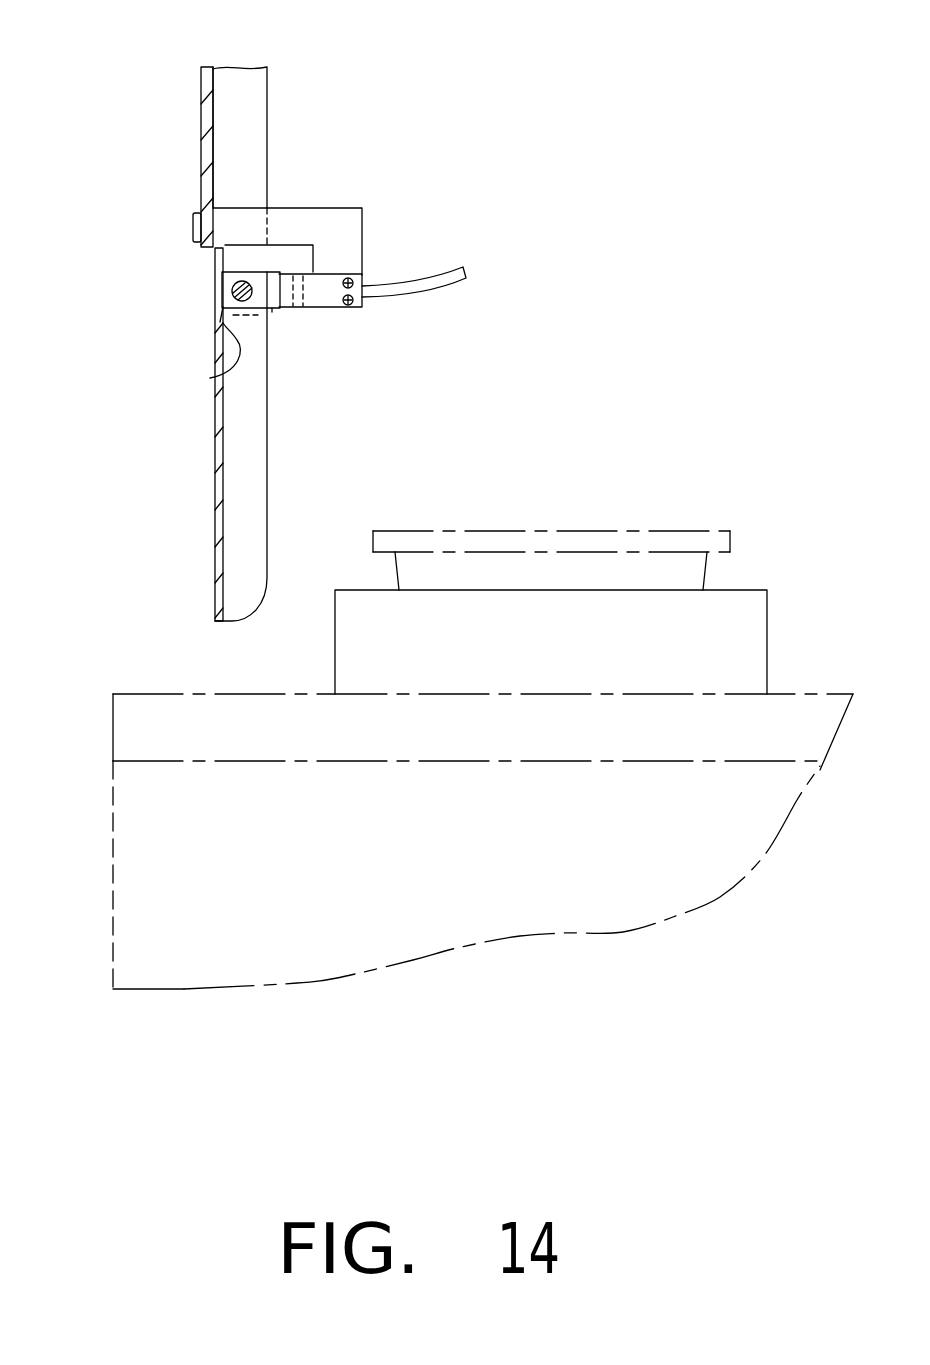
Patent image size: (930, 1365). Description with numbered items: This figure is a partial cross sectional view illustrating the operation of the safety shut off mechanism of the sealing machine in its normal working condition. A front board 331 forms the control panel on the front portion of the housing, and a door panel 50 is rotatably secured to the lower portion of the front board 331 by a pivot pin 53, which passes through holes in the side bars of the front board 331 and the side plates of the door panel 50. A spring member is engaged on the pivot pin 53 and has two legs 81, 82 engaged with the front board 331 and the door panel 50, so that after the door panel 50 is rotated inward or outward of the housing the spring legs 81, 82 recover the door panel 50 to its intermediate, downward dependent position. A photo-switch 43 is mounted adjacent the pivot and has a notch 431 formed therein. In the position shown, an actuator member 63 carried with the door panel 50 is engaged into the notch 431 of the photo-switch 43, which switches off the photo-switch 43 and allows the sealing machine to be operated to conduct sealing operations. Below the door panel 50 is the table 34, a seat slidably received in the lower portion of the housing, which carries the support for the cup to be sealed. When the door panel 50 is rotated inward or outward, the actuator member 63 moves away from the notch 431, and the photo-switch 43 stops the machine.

The front board 331 is at (201, 125).
The leg 81 is at (218, 272).
The door panel 50 is at (195, 512).
The photo-switch 43 is at (322, 288).
The pivot pin 53 is at (233, 278).
The notch 431 is at (293, 313).
The actuator member 63 is at (272, 310).
The leg 82 is at (210, 378).
The table 34 is at (667, 620).